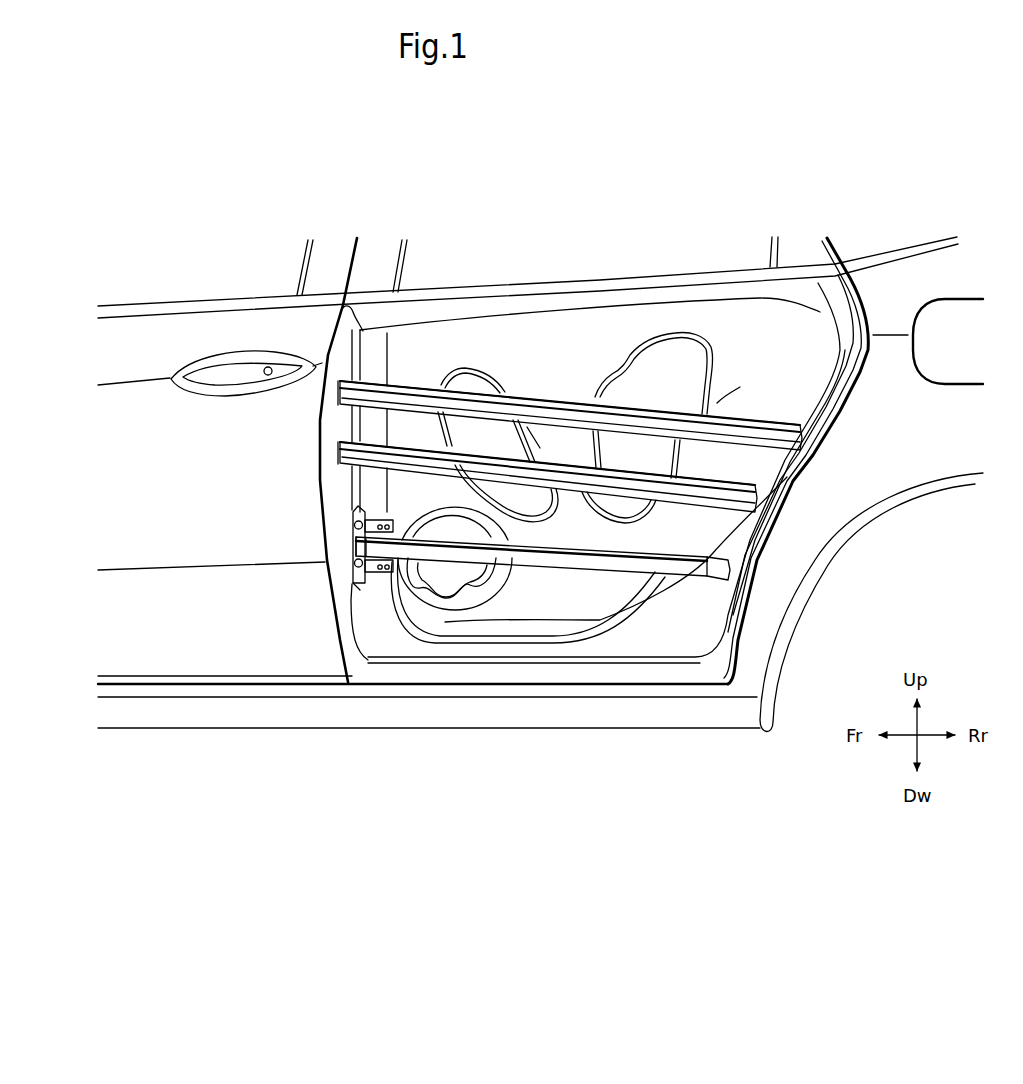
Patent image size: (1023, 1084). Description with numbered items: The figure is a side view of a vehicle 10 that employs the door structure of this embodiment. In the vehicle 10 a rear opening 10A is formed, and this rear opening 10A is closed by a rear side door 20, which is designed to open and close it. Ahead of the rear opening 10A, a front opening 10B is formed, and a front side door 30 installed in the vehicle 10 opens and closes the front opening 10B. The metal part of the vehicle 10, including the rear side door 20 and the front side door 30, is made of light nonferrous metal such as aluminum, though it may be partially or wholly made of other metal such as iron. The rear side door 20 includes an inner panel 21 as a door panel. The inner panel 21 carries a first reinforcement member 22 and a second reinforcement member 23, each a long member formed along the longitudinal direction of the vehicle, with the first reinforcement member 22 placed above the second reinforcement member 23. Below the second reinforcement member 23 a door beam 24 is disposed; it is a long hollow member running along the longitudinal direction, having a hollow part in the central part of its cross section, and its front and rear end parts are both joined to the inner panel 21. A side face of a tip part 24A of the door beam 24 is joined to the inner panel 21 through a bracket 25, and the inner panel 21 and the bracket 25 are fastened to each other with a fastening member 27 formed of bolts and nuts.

The vehicle 10 is at (789, 200).
The rear opening 10A is at (652, 673).
The front opening 10B is at (259, 651).
The rear side door 20 is at (561, 689).
The inner panel 21 is at (500, 626).
The first reinforcement member 22 is at (713, 427).
The second reinforcement member 23 is at (583, 490).
The door beam 24 is at (638, 568).
The tip part of door beam 24A is at (372, 557).
The bracket 25 is at (348, 544).
The fastening member 27 is at (348, 520).
The front side door 30 is at (205, 688).